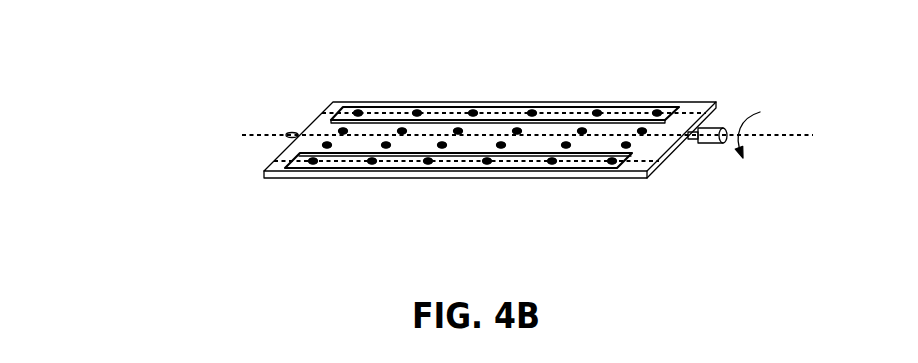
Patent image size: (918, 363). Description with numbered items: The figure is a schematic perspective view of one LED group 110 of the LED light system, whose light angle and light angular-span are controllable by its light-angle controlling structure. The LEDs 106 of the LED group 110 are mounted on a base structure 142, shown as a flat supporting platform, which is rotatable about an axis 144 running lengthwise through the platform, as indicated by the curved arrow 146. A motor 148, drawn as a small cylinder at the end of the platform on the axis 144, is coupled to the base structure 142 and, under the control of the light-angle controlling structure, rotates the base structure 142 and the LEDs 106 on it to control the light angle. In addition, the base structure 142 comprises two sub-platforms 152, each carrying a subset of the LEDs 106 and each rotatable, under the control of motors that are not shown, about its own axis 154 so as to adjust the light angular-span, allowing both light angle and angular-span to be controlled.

The LED group 110 is at (150, 108).
The base structure 142 is at (322, 112).
The axis 144 is at (260, 134).
The arrow 146 is at (754, 118).
The motor 148 is at (725, 128).
The sub-platform 152 is at (568, 108).
The axis of sub-platform 154 is at (627, 112).
The LED 106 is at (358, 113).